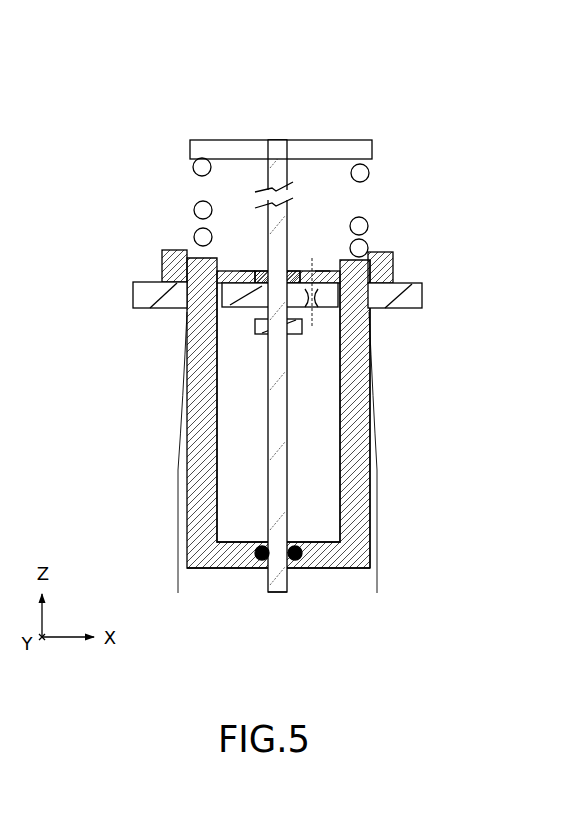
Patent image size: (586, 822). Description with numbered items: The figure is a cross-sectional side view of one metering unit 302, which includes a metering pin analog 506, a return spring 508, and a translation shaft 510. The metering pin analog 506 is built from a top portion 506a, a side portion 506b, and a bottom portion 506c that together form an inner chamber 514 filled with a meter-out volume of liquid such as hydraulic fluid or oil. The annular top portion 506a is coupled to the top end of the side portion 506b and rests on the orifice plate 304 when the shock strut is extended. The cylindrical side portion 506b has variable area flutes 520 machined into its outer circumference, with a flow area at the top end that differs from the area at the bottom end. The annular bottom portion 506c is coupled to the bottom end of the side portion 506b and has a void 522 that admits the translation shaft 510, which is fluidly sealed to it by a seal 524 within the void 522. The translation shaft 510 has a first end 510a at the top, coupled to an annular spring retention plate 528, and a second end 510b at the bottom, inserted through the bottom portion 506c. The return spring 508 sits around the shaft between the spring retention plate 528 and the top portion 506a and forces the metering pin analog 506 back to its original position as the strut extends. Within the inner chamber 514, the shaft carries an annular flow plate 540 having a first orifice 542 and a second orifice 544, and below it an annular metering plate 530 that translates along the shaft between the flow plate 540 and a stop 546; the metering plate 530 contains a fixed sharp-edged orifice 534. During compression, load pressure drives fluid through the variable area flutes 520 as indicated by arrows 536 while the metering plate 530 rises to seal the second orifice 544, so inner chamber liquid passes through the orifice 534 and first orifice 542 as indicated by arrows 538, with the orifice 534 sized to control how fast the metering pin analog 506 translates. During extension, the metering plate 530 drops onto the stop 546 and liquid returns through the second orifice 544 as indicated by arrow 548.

The metering unit 302 is at (104, 72).
The orifice plate 304 is at (129, 298).
The metering pin analog 506 is at (402, 264).
The top portion 506a is at (366, 253).
The side portion 506b is at (355, 410).
The bottom portion 506c is at (370, 566).
The return spring 508 is at (370, 173).
The translation shaft 510 is at (292, 147).
The first end 510a is at (280, 140).
The second end 510b is at (275, 583).
The inner chamber 514 is at (233, 497).
The variable area flutes 520 is at (199, 452).
The void 522 is at (294, 560).
The seal 524 is at (260, 559).
The spring retention plate 528 is at (208, 150).
The metering plate 530 is at (244, 311).
The orifice 534 is at (333, 297).
The arrows 536 is at (392, 283).
The arrows 538 is at (312, 258).
The flow plate 540 is at (208, 272).
The first orifice 542 is at (322, 268).
The second orifice 544 is at (247, 270).
The stop 546 is at (302, 330).
The arrow 548 is at (233, 269).